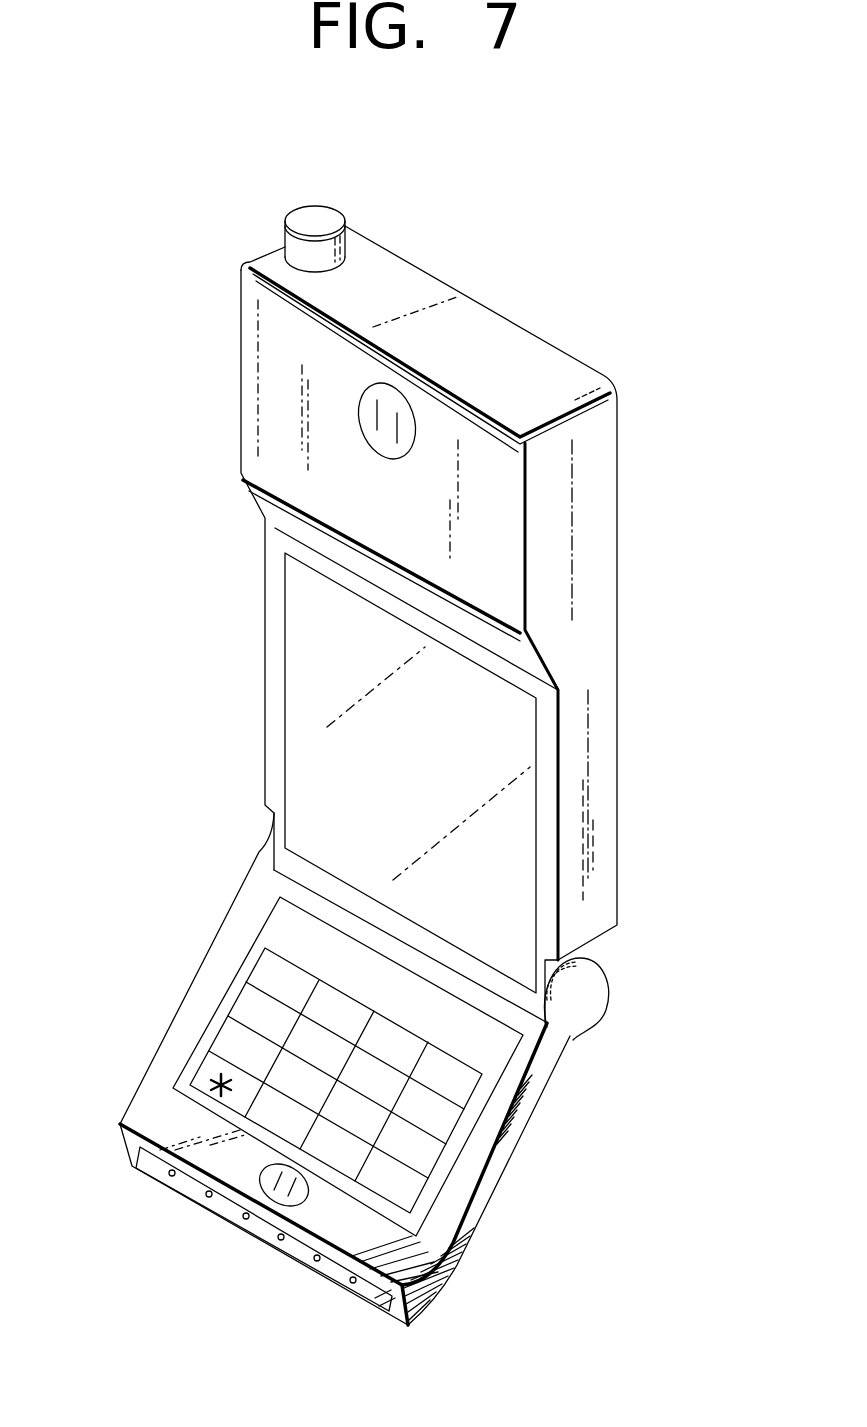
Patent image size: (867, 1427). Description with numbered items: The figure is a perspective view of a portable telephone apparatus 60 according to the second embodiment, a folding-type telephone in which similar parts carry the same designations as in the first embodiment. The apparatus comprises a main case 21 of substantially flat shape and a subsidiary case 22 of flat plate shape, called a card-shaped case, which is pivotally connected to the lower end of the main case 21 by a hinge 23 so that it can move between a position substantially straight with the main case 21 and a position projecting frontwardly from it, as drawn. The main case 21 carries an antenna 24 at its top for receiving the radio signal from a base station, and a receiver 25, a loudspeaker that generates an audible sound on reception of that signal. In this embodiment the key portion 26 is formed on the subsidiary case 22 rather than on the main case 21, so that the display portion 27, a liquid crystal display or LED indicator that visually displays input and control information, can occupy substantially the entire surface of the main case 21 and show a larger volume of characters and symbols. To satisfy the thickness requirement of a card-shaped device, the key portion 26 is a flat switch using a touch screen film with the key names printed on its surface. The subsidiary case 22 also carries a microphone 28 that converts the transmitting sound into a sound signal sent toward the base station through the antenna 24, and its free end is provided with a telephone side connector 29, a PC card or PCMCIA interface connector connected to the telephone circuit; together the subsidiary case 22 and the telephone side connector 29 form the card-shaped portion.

The portable telephone apparatus 60 is at (371, 760).
The main case 21 is at (582, 668).
The subsidiary case 22 is at (320, 1069).
The hinge 23 is at (577, 1005).
The antenna 24 is at (305, 253).
The receiver 25 is at (410, 440).
The key portion 26 is at (432, 1117).
The display portion 27 is at (488, 857).
The microphone 28 is at (260, 1174).
The telephone side connector 29 is at (232, 1208).